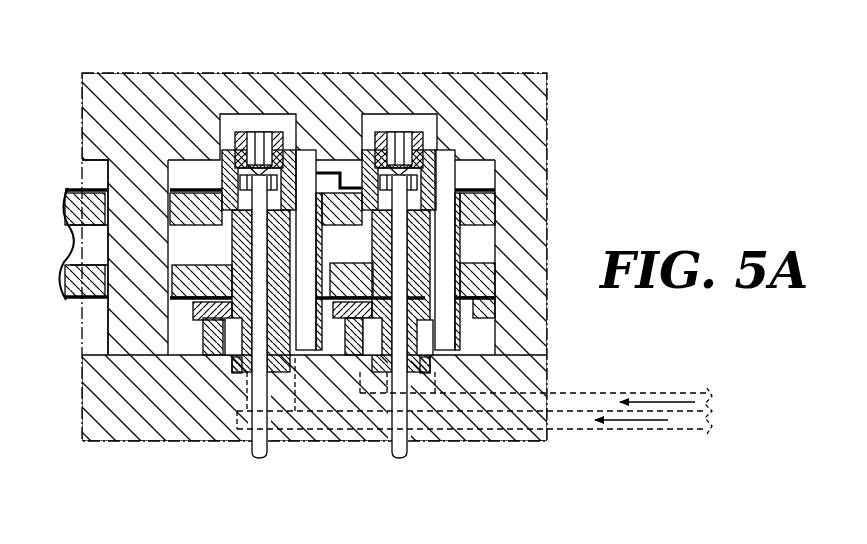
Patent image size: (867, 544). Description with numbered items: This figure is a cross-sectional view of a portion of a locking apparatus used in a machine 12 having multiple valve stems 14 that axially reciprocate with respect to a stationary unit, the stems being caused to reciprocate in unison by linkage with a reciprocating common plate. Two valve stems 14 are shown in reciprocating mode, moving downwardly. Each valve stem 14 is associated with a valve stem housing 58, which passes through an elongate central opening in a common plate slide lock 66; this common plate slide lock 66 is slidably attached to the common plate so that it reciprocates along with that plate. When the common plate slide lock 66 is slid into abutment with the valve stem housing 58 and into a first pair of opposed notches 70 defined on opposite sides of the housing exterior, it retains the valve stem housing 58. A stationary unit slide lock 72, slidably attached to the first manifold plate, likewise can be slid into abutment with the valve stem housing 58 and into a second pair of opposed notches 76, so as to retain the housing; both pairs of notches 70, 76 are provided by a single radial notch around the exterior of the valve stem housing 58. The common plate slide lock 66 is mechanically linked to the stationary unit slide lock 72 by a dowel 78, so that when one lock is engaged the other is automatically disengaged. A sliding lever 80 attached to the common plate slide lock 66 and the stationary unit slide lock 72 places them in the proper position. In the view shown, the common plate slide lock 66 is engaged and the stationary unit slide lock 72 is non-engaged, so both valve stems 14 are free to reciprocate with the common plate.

The machine 12 is at (527, 66).
The valve stem 14 is at (268, 455).
The valve stem housing 58 is at (237, 343).
The common plate slide lock 66 is at (198, 202).
The first pair of opposed notches 70 is at (240, 233).
The stationary unit slide lock 72 is at (188, 290).
The second pair of opposed notches 76 is at (237, 343).
The dowel 78 is at (300, 235).
The sliding lever 80 is at (657, 392).